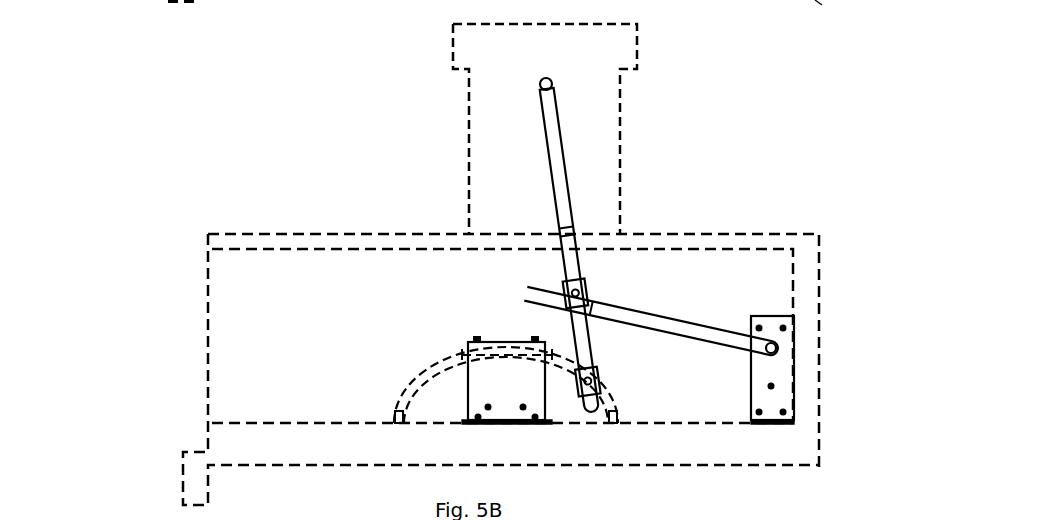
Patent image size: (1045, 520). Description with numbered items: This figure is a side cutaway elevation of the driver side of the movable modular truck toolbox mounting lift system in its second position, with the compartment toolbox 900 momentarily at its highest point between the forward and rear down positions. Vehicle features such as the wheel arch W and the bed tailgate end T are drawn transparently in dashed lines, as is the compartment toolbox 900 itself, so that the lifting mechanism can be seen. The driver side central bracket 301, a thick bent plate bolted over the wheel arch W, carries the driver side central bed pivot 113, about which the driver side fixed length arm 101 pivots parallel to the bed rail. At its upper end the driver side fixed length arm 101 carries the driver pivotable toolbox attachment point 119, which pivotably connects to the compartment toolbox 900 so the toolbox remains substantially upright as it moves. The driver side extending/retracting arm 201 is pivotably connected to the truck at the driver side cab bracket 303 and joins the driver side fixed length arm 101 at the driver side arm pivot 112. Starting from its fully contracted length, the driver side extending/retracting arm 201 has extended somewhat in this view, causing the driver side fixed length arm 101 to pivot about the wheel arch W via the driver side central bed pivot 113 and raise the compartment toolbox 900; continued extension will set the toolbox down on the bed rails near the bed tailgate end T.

The bed tailgate end T is at (208, 358).
The drawer compartment toolbox 900 is at (620, 20).
The wheel arch W is at (443, 393).
The driver side central bracket 301 is at (478, 380).
The driver side cab bracket 303 is at (778, 370).
The driver side fixed length arm 101 is at (524, 262).
The driver side extending/retracting arm 201 is at (700, 332).
The driver side arm pivot 112 is at (510, 290).
The driver side central bed pivot 113 is at (518, 382).
The driver pivotable toolbox attachment point 119 is at (553, 84).